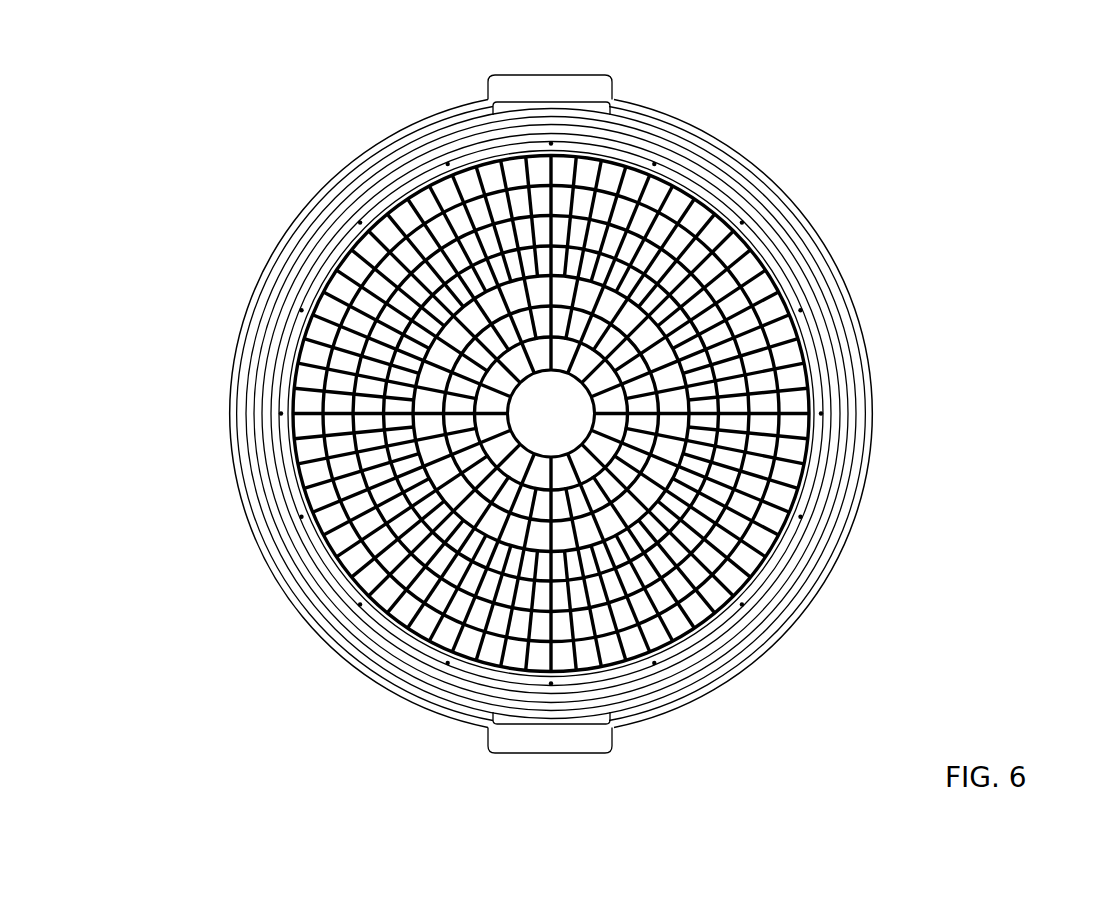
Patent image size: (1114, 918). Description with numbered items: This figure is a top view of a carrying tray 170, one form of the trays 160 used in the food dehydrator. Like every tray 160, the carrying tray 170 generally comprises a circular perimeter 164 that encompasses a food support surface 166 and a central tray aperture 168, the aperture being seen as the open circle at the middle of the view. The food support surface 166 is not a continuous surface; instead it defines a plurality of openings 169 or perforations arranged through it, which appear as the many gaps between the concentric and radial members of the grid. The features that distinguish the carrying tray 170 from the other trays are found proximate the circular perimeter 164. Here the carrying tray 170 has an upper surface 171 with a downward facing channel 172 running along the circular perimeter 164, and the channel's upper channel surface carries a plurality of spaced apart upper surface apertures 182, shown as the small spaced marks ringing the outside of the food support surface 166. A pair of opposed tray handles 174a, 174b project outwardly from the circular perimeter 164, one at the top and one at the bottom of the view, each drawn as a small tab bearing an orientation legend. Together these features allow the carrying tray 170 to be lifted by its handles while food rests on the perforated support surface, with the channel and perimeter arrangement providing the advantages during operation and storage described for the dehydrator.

The tray 160 is at (857, 303).
The circular perimeter 164 is at (745, 150).
The food support surface 166 is at (380, 245).
The central tray aperture 168 is at (745, 620).
The openings 169 is at (750, 238).
The carrying tray 170 is at (997, 95).
The upper surface 171 is at (562, 433).
The downward facing channel 172 is at (317, 600).
The tray handle 174a is at (575, 73).
The tray handle 174b is at (563, 755).
The upper surface apertures 182 is at (798, 264).